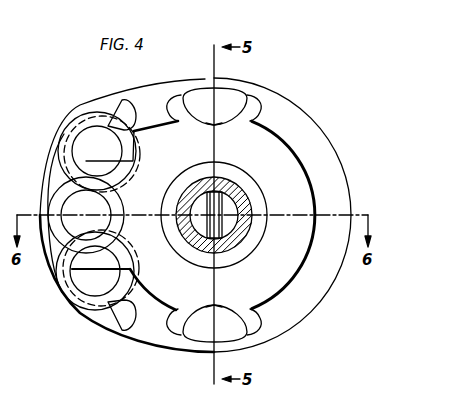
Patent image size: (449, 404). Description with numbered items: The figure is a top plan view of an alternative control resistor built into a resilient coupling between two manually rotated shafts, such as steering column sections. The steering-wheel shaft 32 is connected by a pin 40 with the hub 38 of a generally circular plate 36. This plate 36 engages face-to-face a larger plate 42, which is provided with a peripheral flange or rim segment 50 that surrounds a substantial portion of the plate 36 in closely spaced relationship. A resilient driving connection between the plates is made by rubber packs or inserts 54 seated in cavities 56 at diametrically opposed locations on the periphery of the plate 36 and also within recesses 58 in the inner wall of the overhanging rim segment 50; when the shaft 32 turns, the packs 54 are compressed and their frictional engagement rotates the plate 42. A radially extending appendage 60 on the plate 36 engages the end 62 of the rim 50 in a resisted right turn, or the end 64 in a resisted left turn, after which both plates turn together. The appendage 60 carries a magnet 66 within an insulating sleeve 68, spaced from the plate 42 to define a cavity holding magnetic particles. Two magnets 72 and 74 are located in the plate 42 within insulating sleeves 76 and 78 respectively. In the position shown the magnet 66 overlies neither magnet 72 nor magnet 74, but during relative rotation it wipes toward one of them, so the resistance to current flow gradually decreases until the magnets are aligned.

The shaft 32 is at (243, 192).
The circular plate 36 is at (282, 274).
The hub 38 is at (195, 263).
The pin 40 is at (221, 227).
The plate 42 is at (126, 100).
The peripheral flange or rim segment 50 is at (293, 317).
The rubber packs or inserts 54 is at (230, 97).
The cavities 56 is at (218, 126).
The recesses 58 is at (263, 101).
The radially extending appendage 60 is at (43, 185).
The end of rim 62 is at (121, 97).
The end of peripheral rim 64 is at (120, 329).
The magnet 66 is at (70, 226).
The insulating sleeve 68 is at (38, 200).
The magnet 72 is at (80, 141).
The magnet 74 is at (85, 284).
The insulating sleeve 76 is at (73, 121).
The insulating sleeve 78 is at (67, 285).